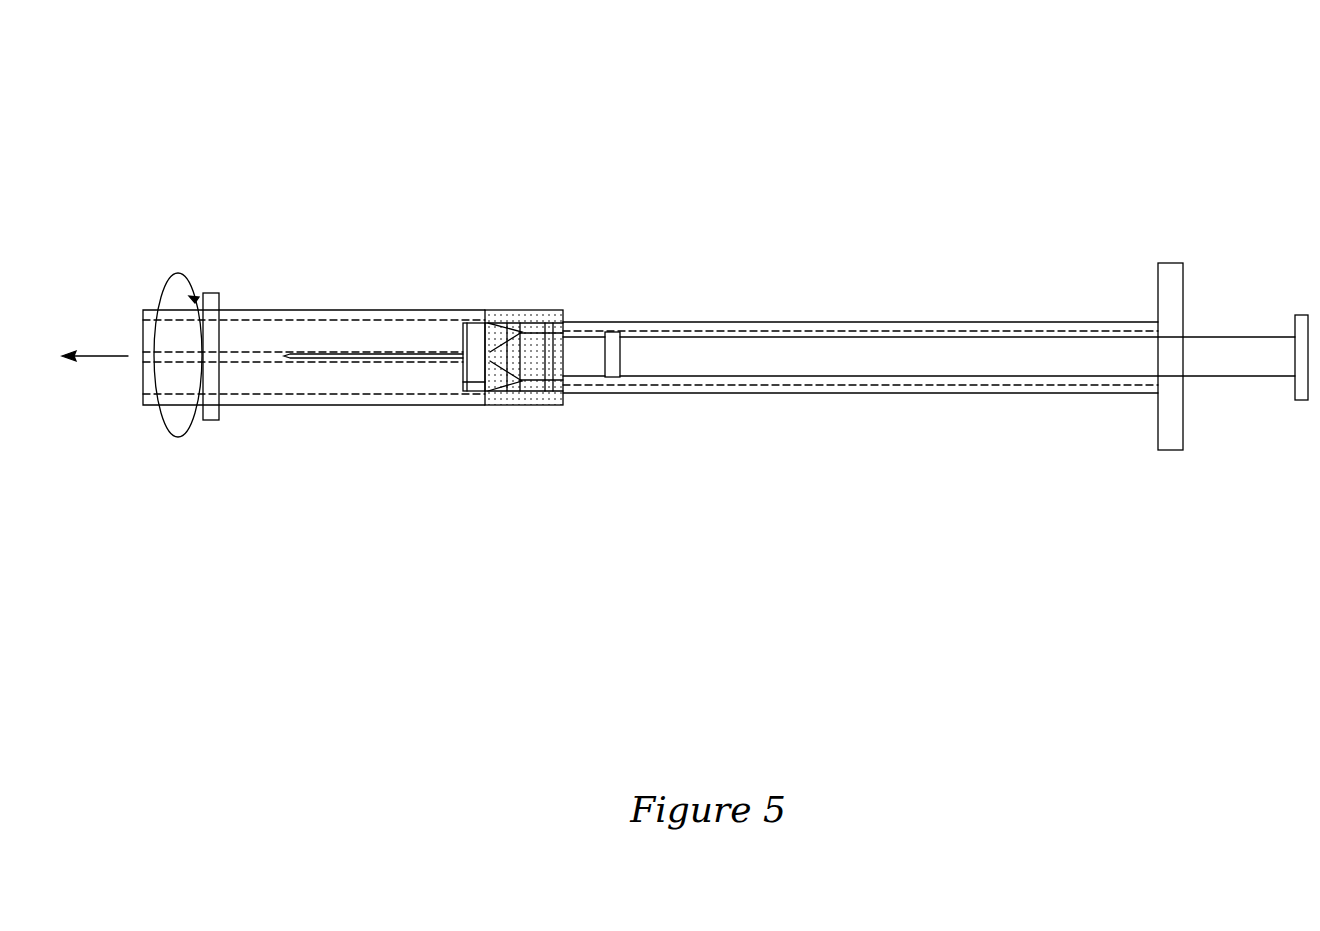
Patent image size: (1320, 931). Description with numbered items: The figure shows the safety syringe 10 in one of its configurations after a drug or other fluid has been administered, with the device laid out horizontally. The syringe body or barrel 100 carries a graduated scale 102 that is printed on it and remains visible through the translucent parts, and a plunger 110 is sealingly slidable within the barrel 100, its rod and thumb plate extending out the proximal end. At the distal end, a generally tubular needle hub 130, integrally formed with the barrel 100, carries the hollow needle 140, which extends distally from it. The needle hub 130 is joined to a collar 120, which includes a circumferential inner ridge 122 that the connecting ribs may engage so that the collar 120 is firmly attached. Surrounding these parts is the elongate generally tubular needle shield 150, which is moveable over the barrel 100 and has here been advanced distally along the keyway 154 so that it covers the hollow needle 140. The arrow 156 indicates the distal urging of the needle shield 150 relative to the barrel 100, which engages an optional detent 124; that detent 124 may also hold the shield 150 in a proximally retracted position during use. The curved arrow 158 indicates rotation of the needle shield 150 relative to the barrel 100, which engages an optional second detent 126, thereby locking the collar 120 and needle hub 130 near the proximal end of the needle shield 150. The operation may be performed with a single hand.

The safety syringe 10 is at (992, 95).
The barrel 100 is at (872, 322).
The graduated scale 102 is at (861, 395).
The plunger 110 is at (1238, 336).
The collar 120 is at (493, 322).
The circumferential inner ridge 122 is at (495, 383).
The detent 124 is at (490, 360).
The second detent 126 is at (462, 382).
The generally tubular needle hub 130 is at (455, 350).
The hollow needle 140 is at (290, 358).
The elongate generally tubular needle shield 150 is at (293, 308).
The keyway 154 is at (307, 363).
The arrow 156 is at (95, 370).
The curved arrow 158 is at (178, 369).